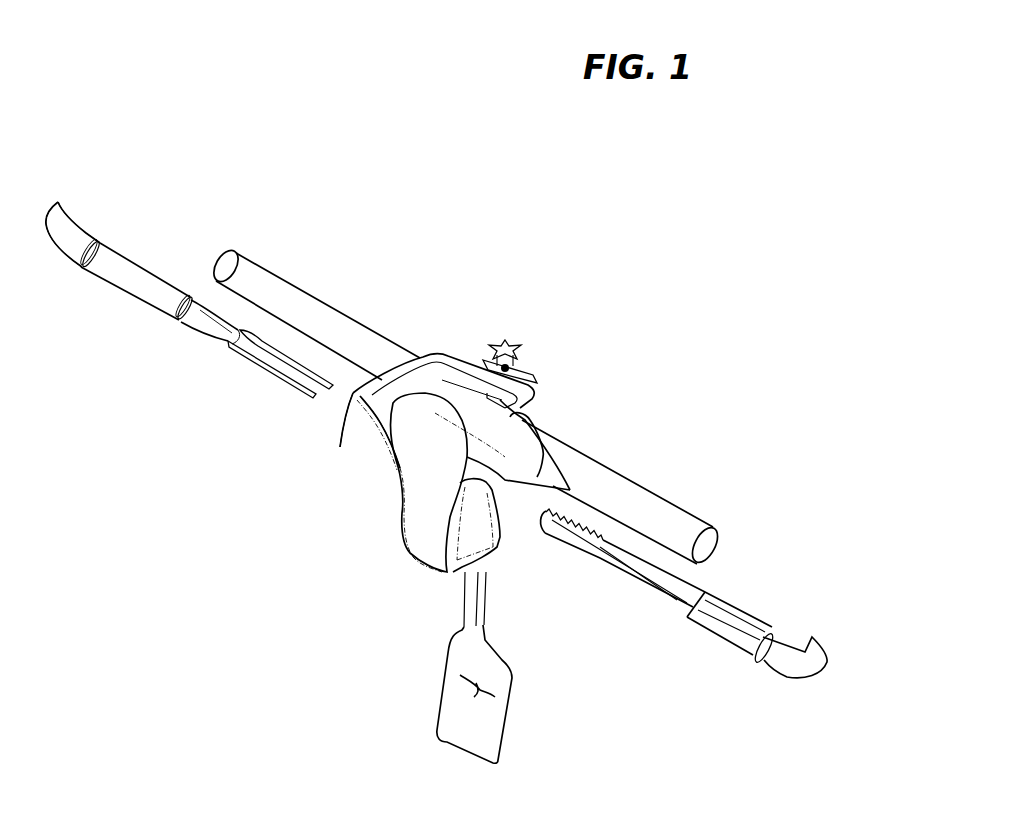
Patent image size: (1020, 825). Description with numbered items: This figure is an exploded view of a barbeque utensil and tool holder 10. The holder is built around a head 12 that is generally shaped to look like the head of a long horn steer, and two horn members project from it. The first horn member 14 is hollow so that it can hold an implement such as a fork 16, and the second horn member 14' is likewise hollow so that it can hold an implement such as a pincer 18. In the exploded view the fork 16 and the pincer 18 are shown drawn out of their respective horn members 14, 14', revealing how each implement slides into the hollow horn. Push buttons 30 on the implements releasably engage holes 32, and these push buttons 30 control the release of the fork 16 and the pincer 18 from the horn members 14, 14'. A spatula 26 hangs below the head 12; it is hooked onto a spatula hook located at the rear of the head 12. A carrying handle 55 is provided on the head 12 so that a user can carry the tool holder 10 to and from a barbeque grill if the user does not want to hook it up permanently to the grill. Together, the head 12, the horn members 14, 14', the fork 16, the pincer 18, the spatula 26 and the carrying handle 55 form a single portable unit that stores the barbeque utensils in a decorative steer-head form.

The barbeque utensil and tool holder 10 is at (480, 258).
The head 12 is at (340, 447).
The first horn member 14 is at (318, 308).
The second horn member 14' is at (617, 467).
The fork 16 is at (157, 273).
The pincer 18 is at (620, 577).
The spatula 26 is at (465, 653).
The push buttons 30 is at (80, 265).
The holes 32 is at (253, 262).
The carrying handle 55 is at (400, 468).